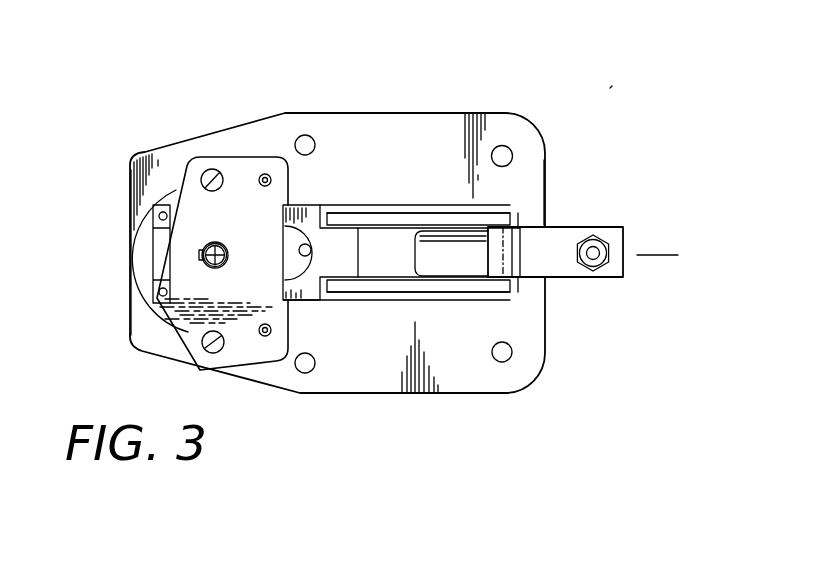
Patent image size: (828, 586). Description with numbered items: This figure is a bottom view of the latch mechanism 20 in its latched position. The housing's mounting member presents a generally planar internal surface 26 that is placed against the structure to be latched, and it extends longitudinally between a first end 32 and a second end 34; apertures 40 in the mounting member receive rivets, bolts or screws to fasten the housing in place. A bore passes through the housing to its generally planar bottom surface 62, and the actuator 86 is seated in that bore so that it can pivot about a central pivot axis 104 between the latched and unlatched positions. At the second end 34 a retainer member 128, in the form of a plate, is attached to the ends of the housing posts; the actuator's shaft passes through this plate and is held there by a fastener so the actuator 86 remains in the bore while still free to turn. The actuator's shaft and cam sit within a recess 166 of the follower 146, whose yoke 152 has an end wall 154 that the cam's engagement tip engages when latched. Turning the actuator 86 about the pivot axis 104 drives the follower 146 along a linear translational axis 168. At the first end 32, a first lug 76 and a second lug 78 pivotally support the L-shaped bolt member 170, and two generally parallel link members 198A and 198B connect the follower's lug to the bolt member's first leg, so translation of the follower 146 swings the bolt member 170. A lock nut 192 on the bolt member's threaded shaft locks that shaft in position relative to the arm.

The latch mechanism 20 is at (612, 88).
The internal surface 26 is at (423, 128).
The first end 32 is at (548, 158).
The second end 34 is at (130, 202).
The apertures 40 is at (307, 136).
The bottom surface 62 is at (365, 207).
The first lug 76 is at (468, 205).
The second lug 78 is at (475, 298).
The actuator 86 is at (221, 268).
The central pivot axis 104 is at (222, 247).
The retainer member 128 is at (247, 163).
The follower 146 is at (303, 296).
The yoke 152 is at (333, 210).
The end wall 154 is at (305, 249).
The recess 166 is at (297, 270).
The linear translational axis 168 is at (672, 255).
The bolt member 170 is at (570, 227).
The lock nut 192 is at (603, 278).
The link member 198A is at (380, 216).
The link member 198B is at (410, 288).